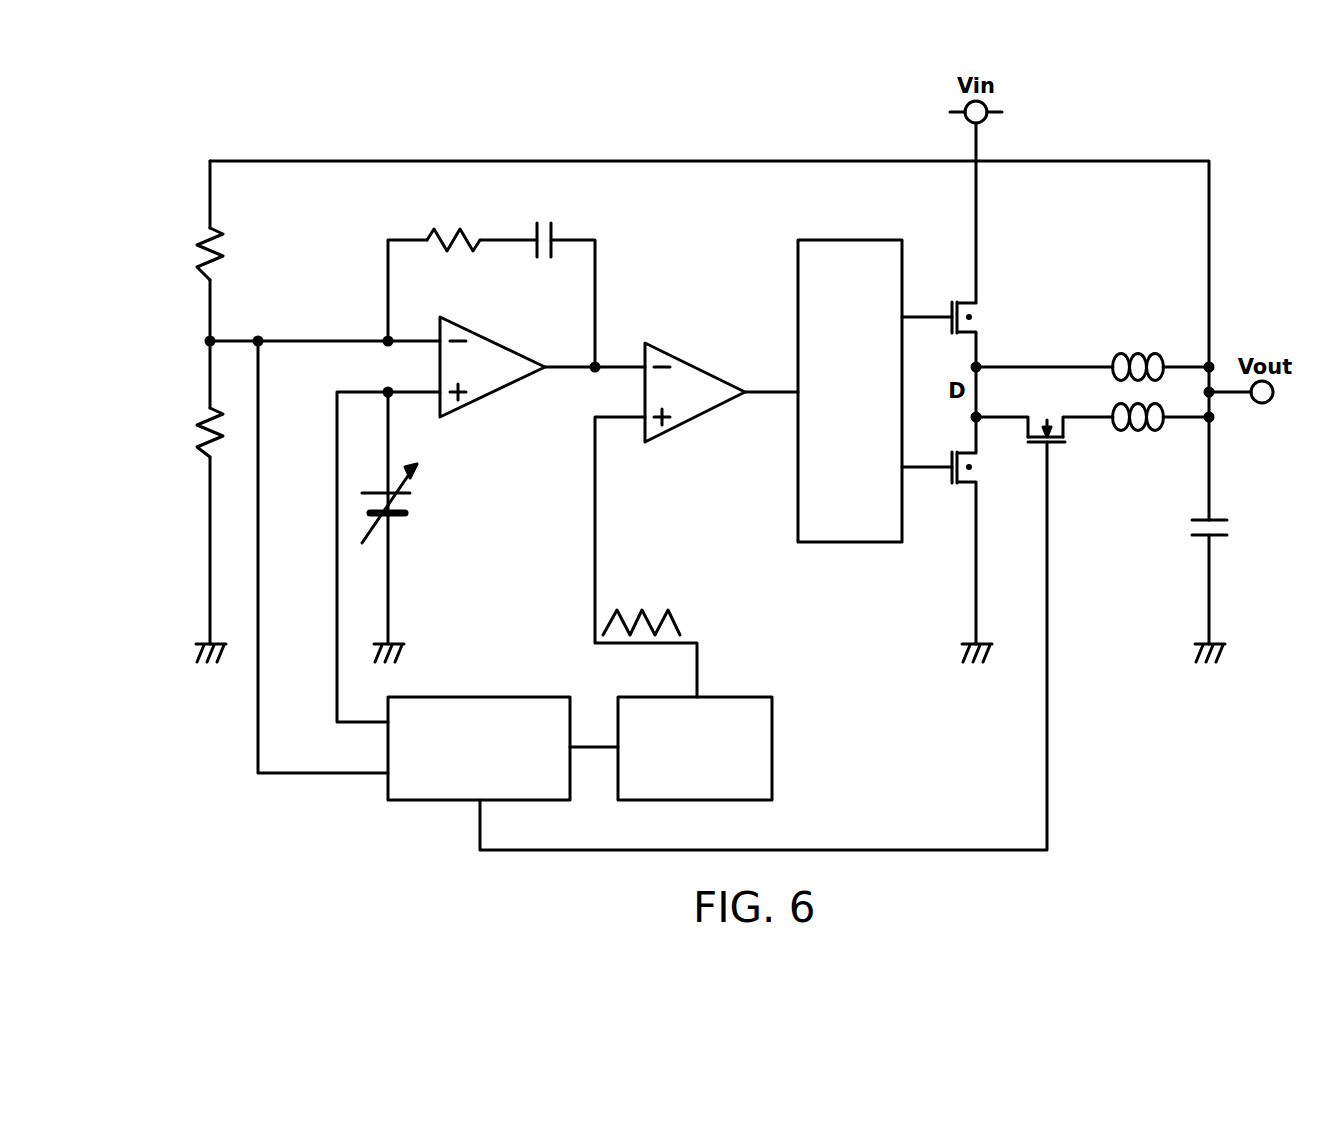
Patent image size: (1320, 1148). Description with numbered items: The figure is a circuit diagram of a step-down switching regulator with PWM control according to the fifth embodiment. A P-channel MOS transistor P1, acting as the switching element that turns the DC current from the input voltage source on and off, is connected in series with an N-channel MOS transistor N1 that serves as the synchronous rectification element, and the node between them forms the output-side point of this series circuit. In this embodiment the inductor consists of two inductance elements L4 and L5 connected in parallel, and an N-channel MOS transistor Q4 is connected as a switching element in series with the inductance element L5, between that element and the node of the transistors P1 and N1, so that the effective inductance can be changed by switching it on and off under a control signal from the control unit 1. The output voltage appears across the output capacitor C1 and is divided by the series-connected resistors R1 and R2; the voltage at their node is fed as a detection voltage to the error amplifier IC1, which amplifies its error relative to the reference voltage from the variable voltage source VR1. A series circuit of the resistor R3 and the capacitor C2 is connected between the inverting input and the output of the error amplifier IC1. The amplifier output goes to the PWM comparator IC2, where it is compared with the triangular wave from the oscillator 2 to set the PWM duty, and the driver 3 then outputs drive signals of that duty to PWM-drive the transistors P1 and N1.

The resistor R1 is at (200, 258).
The resistor R2 is at (198, 432).
The resistor R3 is at (457, 220).
The capacitor C2 is at (547, 220).
The error amplifier IC1 is at (487, 334).
The PWM comparator IC2 is at (690, 360).
The driver 3 is at (847, 240).
The P-channel MOS transistor P1 is at (982, 327).
The N-channel MOS transistor N1 is at (985, 472).
The inductance element L4 is at (1142, 347).
The inductance element L5 is at (1138, 433).
The N-channel MOS transistor Q4 is at (1065, 440).
The output capacitor C1 is at (1225, 527).
The voltage source VR1 is at (413, 507).
The control unit 1 is at (467, 697).
The oscillator 2 is at (723, 697).